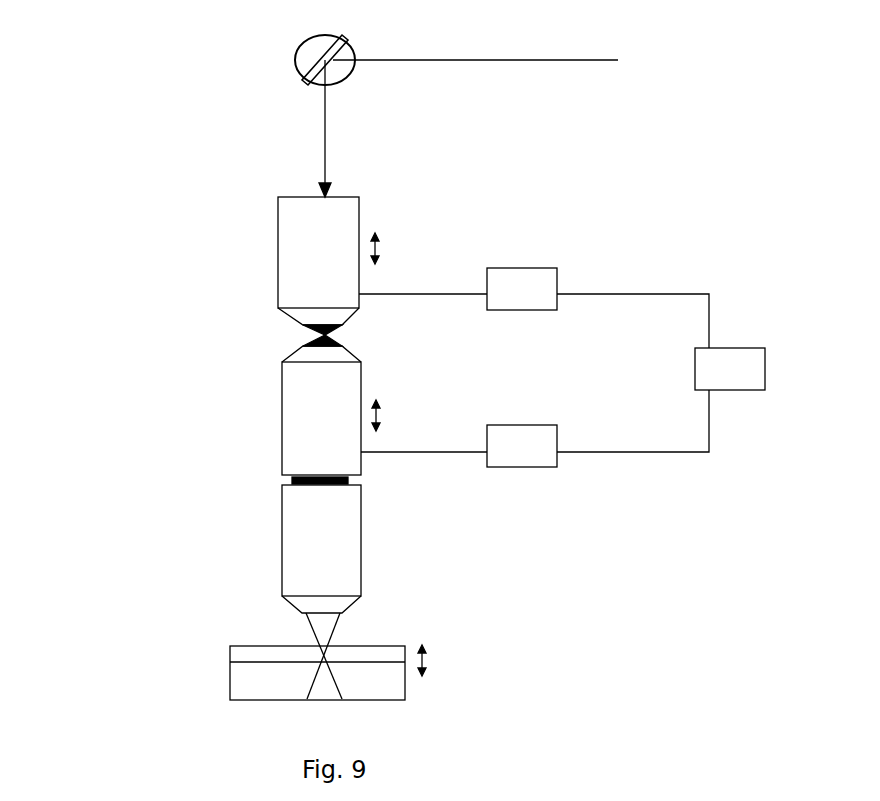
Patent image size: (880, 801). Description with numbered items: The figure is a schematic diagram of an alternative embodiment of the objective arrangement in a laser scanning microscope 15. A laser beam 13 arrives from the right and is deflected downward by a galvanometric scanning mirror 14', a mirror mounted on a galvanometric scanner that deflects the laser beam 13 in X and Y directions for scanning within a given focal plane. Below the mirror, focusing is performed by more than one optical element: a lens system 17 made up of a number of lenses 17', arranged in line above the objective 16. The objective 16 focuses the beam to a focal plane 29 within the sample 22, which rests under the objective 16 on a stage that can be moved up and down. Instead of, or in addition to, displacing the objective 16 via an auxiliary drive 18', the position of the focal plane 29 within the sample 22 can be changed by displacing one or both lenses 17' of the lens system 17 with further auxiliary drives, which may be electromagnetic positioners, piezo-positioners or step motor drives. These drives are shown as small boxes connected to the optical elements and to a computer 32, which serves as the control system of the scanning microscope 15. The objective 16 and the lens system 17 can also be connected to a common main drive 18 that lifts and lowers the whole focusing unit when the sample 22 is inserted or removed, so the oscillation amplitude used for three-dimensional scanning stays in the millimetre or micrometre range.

The laser beam 13 is at (490, 63).
The galvanometric scanning mirror 14' is at (281, 60).
The laser scanning microscope 15 is at (202, 399).
The objective 16 is at (282, 555).
The lens system 17 is at (253, 246).
The lens 17' is at (276, 332).
The main drive 18 is at (525, 346).
The auxiliary drive 18' is at (589, 266).
The sample 22 is at (230, 680).
The focal plane 29 is at (256, 660).
The computer 32 is at (757, 346).